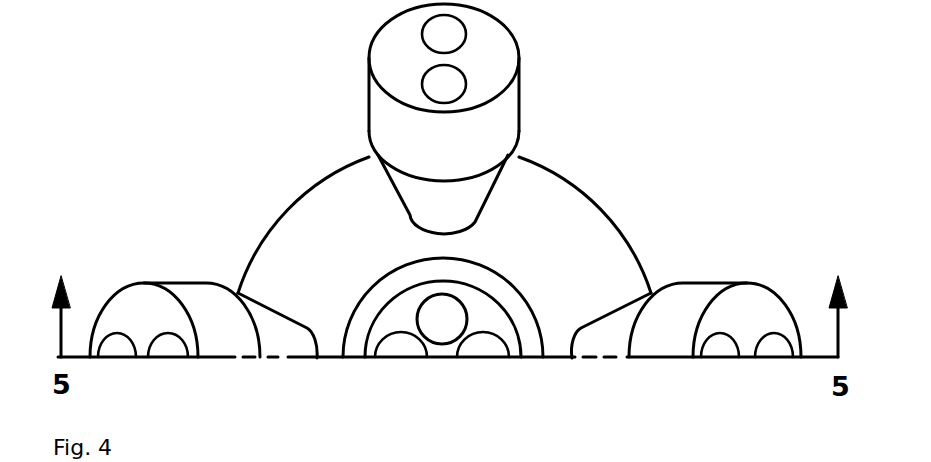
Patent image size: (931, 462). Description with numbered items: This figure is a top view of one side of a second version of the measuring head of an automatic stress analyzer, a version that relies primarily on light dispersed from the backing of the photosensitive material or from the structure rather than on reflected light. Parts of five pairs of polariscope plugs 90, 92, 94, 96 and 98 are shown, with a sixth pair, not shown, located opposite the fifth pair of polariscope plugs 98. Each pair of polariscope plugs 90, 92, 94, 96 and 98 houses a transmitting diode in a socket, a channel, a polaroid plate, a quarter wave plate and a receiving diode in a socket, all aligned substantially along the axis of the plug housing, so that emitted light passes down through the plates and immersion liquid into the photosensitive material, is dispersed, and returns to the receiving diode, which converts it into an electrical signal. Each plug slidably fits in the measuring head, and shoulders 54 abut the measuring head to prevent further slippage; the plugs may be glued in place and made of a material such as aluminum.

The shoulders 54 is at (473, 222).
The polariscope plugs 90 is at (762, 287).
The polariscope plugs 92 is at (117, 292).
The polariscope plugs 94 is at (380, 312).
The polariscope plugs 96 is at (467, 312).
The polariscope plugs 98 is at (513, 33).